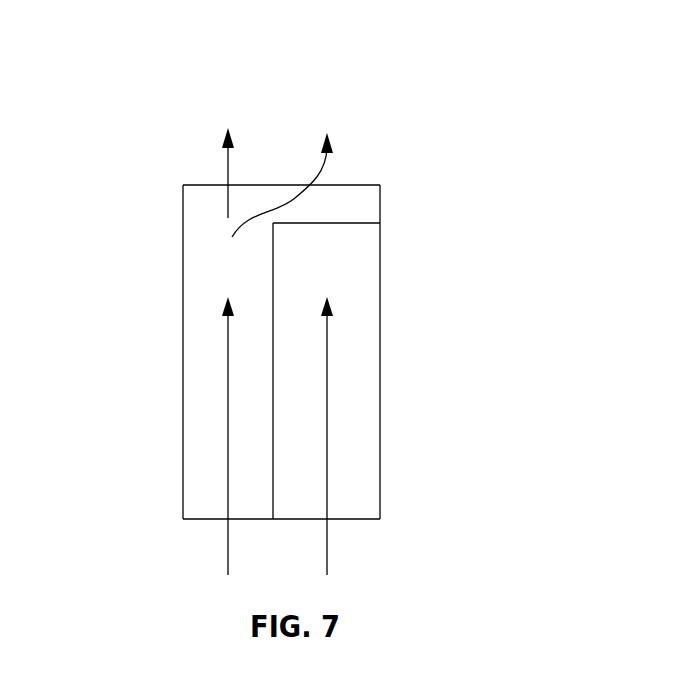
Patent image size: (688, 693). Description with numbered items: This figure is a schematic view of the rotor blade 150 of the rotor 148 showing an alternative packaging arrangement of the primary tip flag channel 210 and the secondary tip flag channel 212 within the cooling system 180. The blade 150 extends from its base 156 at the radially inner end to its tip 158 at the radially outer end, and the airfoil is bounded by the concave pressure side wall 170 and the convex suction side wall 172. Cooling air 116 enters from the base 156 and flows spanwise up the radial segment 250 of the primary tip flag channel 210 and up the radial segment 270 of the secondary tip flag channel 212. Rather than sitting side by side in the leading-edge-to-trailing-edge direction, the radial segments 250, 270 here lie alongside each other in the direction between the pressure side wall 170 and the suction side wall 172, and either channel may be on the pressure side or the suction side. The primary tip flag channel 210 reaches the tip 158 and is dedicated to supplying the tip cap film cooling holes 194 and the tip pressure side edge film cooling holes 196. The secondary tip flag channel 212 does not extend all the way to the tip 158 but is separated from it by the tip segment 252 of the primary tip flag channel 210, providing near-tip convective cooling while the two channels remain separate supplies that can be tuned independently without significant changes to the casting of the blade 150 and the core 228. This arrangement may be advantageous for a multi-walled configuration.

The rotor blade 150 is at (424, 166).
The base 156 is at (380, 518).
The tip 158 is at (252, 185).
The rotor 148 is at (295, 185).
The cooling air 116 is at (229, 557).
The pressure side wall 170 is at (380, 328).
The suction side wall 172 is at (183, 317).
The cooling system 180 is at (385, 416).
The tip cap film cooling holes 194 is at (226, 163).
The tip pressure side edge film cooling holes 196 is at (329, 162).
The primary tip flag channel 210 is at (195, 368).
The secondary tip flag channel 212 is at (370, 287).
The core 228 is at (394, 482).
The radial segment 250 is at (195, 458).
The tip segment 252 is at (370, 208).
The radial segment 270 is at (370, 450).